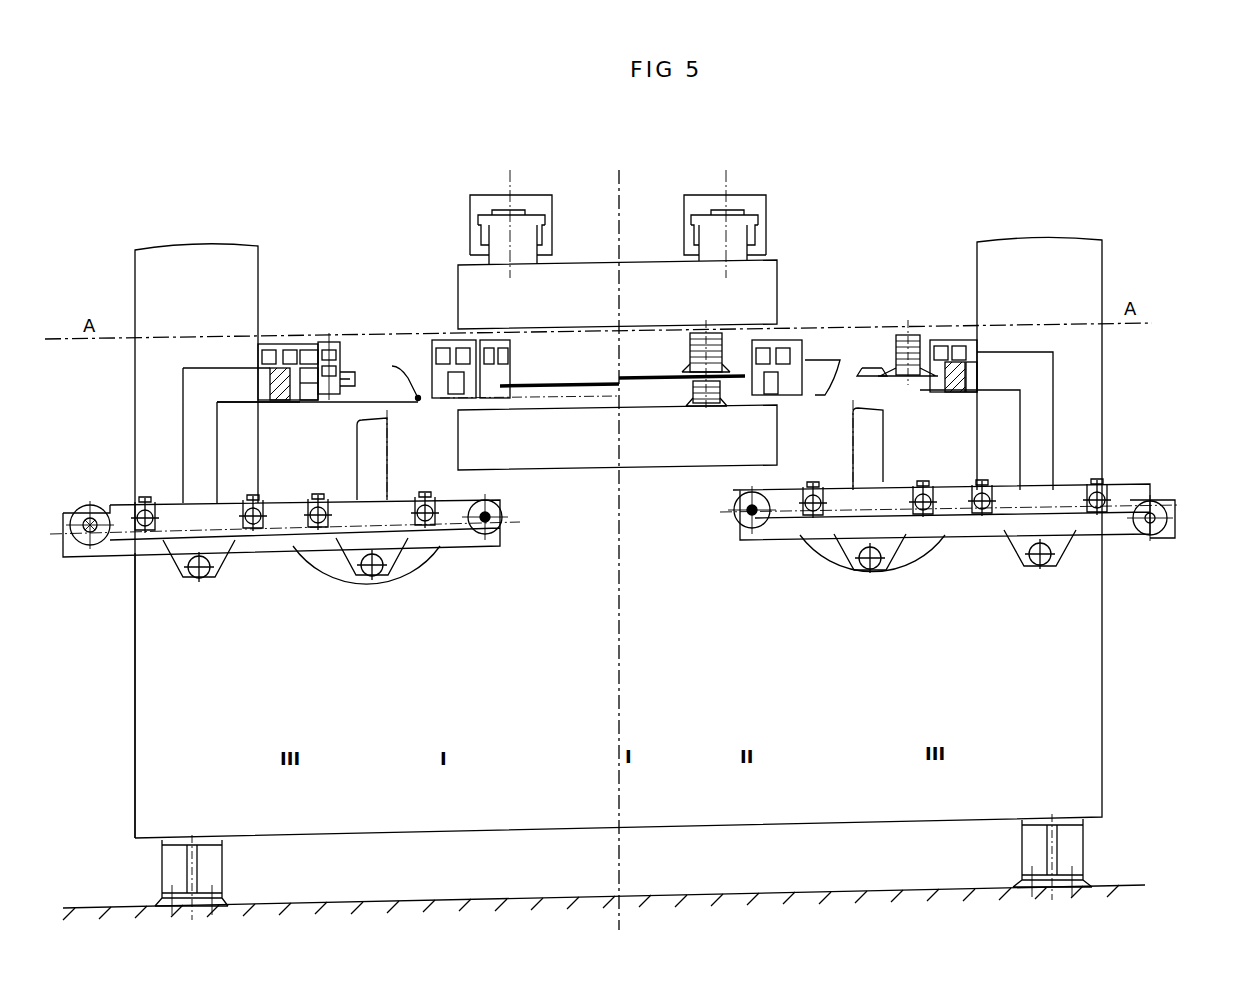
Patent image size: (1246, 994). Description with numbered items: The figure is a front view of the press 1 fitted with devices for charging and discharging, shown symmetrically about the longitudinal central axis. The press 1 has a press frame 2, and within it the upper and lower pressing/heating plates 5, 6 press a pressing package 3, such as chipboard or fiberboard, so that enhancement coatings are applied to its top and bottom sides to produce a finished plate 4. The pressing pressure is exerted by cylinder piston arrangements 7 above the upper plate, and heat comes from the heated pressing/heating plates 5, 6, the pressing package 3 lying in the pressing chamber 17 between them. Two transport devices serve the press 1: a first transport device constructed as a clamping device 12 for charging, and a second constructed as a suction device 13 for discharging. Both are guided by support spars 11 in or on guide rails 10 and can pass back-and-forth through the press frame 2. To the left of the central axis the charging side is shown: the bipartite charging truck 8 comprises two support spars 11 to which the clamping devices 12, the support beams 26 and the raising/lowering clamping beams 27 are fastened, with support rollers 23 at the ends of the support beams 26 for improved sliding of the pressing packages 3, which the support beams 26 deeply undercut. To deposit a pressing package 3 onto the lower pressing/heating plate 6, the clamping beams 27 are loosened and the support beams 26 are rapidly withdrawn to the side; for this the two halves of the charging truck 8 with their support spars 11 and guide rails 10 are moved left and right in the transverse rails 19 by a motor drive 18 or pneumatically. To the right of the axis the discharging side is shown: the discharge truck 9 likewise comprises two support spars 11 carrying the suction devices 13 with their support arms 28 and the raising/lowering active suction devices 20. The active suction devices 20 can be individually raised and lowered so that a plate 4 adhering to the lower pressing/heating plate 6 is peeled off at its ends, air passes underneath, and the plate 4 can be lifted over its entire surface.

The press 1 is at (860, 279).
The press frame 2 is at (1017, 710).
The pressing package 3 is at (600, 383).
The plate 4 is at (651, 375).
The upper pressing/heating plate 5 is at (617, 294).
The lower pressing/heating plate 6 is at (617, 437).
The cylinder piston arrangement 7 is at (527, 250).
The charging truck 8 is at (704, 523).
The discharge truck 9 is at (989, 500).
The guide rail 10 is at (280, 400).
The support spar 11 is at (930, 372).
The clamping device 12 is at (330, 347).
The suction device 13 is at (866, 373).
The pressing chamber 17 is at (670, 353).
The drive 18 is at (93, 533).
The transverse rail 19 is at (473, 520).
The active suction device 20 is at (905, 509).
The support roller 23 is at (416, 402).
The support beam 26 is at (375, 403).
The clamping beam 27 is at (342, 362).
The support arm 28 is at (905, 323).